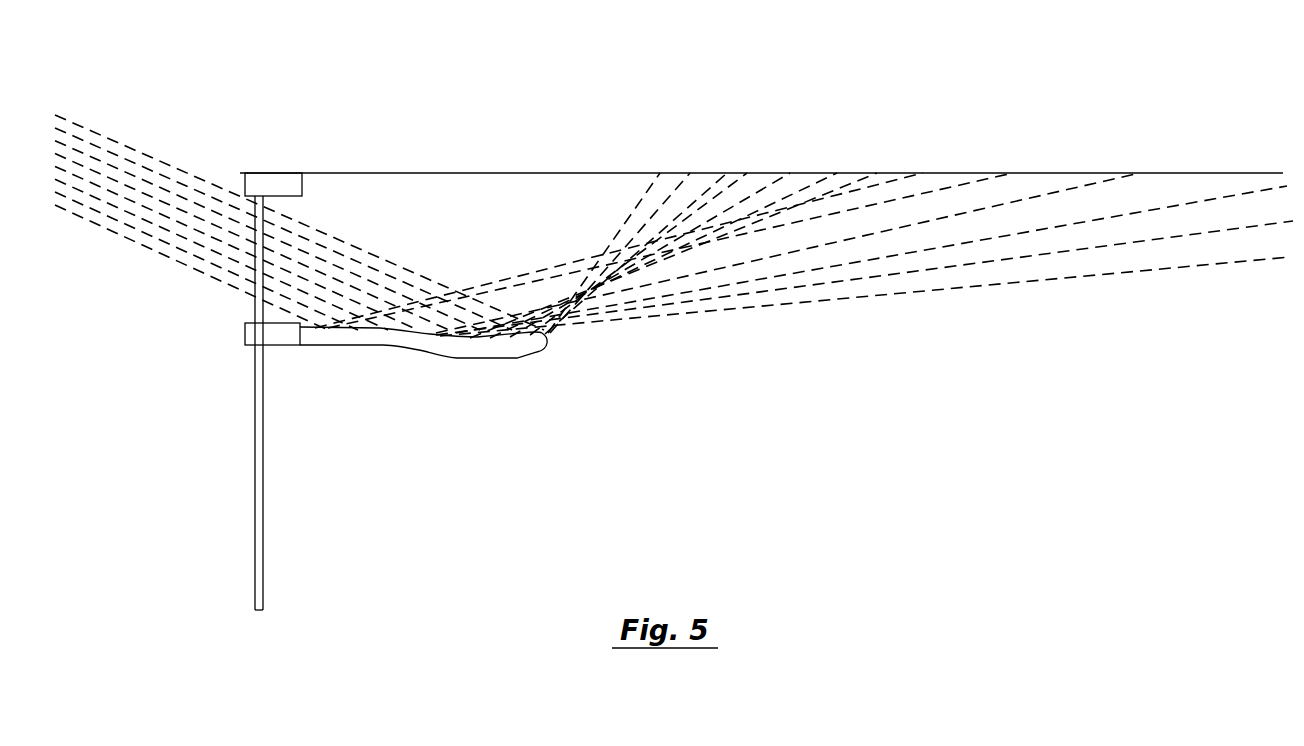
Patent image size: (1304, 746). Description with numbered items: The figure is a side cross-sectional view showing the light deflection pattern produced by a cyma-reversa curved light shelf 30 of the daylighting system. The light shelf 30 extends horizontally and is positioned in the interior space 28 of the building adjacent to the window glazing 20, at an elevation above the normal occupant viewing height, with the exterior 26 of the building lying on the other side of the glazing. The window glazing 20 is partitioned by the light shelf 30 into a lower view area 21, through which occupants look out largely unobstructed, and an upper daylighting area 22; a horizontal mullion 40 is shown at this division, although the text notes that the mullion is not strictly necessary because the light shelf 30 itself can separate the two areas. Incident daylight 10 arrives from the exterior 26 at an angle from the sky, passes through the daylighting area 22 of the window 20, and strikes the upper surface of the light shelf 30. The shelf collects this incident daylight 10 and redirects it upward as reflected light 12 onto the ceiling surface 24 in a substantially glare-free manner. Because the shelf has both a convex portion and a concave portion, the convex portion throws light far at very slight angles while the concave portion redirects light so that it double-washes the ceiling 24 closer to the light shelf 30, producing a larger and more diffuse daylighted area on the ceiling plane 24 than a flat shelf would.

The incident daylight 10 is at (129, 156).
The reflected light 12 is at (572, 240).
The window glazing 20 is at (338, 437).
The view area 21 is at (255, 481).
The daylighting area 22 is at (253, 309).
The ceiling surface 24 is at (452, 173).
The exterior 26 is at (155, 400).
The interior space 28 is at (685, 464).
The light shelf 30 is at (449, 370).
The horizontal mullion 40 is at (278, 337).